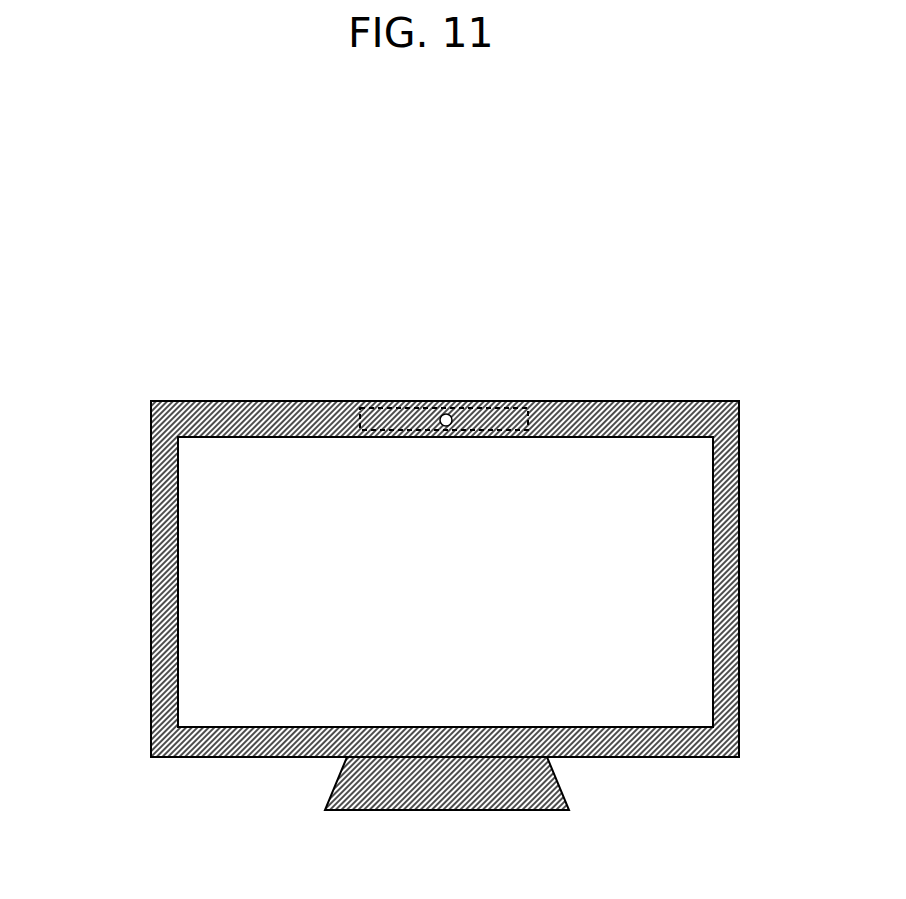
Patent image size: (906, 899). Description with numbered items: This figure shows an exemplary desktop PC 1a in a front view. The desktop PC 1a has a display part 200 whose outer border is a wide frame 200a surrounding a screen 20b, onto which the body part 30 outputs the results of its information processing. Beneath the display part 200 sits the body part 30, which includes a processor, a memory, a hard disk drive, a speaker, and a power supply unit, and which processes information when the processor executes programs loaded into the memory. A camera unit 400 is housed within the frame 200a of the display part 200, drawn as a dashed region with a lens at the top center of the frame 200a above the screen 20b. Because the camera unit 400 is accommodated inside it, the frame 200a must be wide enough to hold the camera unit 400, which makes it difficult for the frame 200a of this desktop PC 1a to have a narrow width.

The desktop PC 1a is at (699, 186).
The display part 200 is at (667, 401).
The frame 200a is at (150, 412).
The screen 20b is at (183, 583).
The camera unit 400 is at (483, 402).
The body part 30 is at (345, 811).